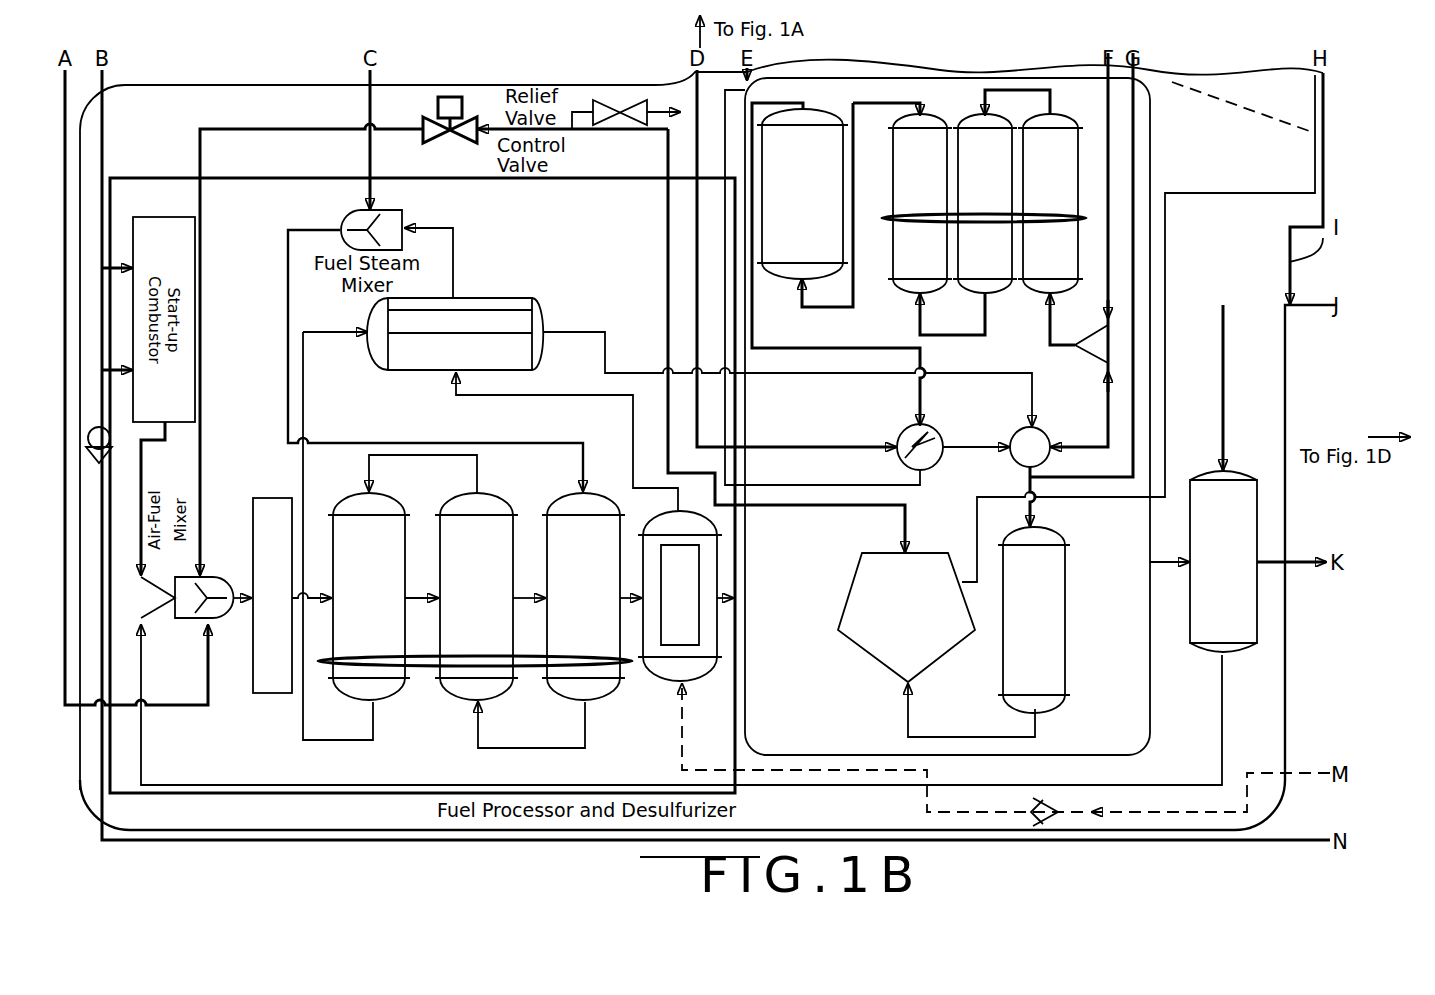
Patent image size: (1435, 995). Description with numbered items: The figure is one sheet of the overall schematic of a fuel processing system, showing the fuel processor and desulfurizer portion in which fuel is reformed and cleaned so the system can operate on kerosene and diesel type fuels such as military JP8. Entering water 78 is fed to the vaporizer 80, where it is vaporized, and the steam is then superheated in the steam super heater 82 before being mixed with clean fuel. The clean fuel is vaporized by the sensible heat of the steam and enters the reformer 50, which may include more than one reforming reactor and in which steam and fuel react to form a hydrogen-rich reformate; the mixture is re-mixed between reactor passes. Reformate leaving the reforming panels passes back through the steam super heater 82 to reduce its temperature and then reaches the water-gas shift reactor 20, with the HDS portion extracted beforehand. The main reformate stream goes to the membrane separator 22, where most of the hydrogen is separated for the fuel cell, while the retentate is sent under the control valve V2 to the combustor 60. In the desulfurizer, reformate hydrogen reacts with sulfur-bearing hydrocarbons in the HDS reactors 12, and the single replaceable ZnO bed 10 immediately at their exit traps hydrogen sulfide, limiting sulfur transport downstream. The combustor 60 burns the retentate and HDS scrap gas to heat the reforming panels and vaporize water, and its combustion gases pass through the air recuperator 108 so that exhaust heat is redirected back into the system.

The control valve V2 is at (460, 136).
The steam super heater 82 is at (491, 297).
The HDS reactors 12 is at (893, 221).
The ZnO bed 10 is at (790, 270).
The air recuperator 108 is at (1243, 473).
The combustor 60 is at (272, 497).
The reformer 50 is at (428, 670).
The vaporizer 80 is at (660, 680).
The water input 78 is at (682, 737).
The water-gas shift reactor 20 is at (1066, 618).
The membrane separator 22 is at (870, 653).